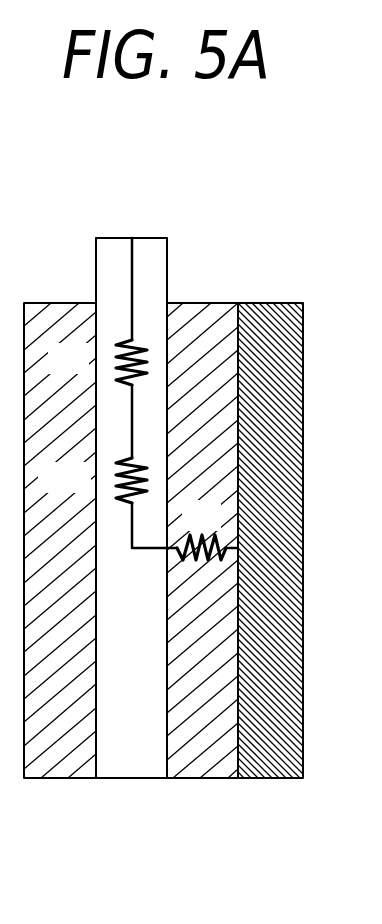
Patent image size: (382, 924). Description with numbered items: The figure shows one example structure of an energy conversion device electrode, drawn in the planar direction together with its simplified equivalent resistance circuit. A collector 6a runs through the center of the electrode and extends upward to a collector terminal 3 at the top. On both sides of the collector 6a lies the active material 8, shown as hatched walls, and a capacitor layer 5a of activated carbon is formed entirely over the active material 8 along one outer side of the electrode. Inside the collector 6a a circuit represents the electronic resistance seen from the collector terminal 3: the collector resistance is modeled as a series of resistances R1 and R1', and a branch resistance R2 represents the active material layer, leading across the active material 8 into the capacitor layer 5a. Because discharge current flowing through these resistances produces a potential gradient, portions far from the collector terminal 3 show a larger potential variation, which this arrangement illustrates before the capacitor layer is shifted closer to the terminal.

The collector terminal 3 is at (151, 247).
The capacitor layer 5a is at (275, 310).
The collector 6a is at (132, 769).
The active material 8 is at (47, 769).
The collector resistance R1 is at (99, 311).
The collector resistance portion R1' is at (94, 444).
The active material resistance R2 is at (185, 529).